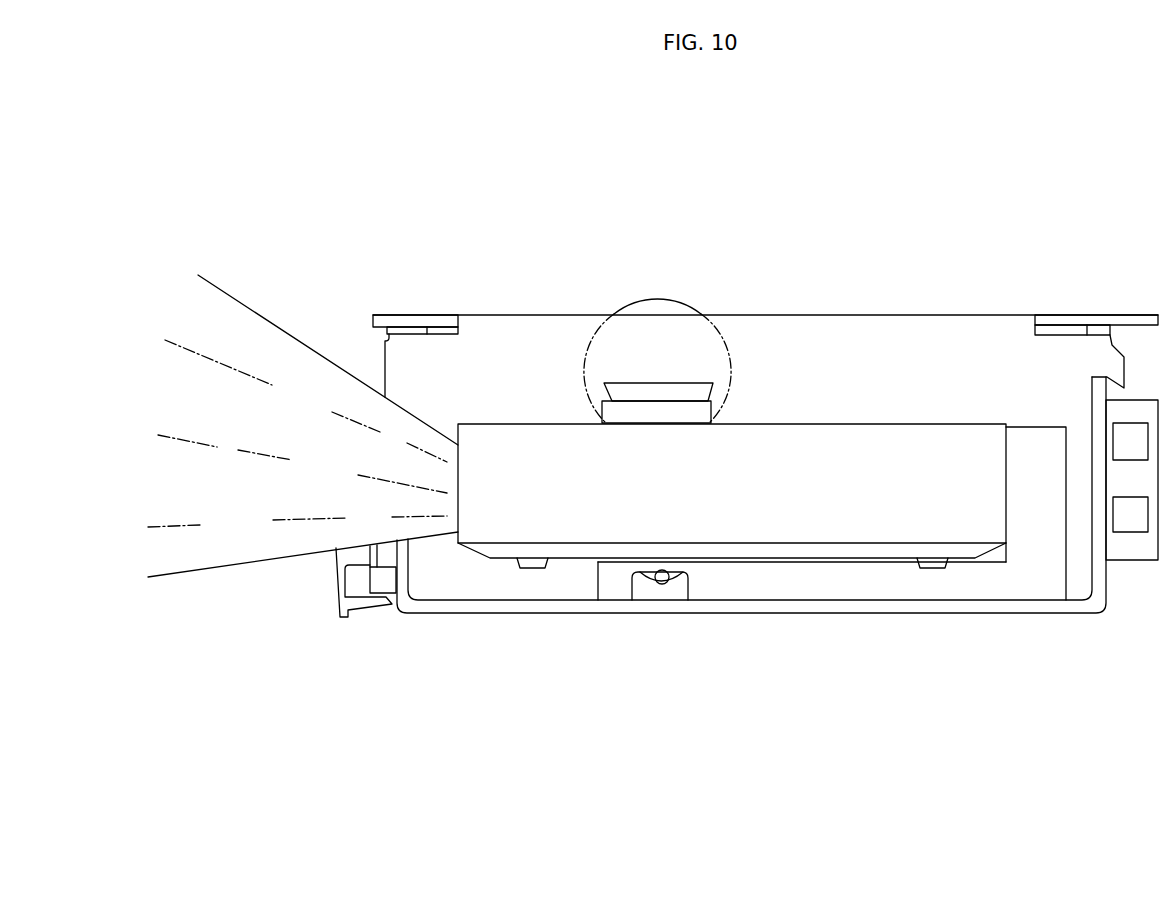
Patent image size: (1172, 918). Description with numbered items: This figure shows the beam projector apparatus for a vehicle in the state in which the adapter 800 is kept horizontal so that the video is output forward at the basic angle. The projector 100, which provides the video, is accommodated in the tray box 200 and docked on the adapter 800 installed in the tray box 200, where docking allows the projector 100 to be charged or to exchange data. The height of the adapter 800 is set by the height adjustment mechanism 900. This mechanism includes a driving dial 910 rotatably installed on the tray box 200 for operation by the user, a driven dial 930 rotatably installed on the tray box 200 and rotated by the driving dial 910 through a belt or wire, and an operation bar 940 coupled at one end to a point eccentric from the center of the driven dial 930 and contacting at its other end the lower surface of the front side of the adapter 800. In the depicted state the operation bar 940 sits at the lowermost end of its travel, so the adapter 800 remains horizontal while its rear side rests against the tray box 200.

The projector 100 is at (883, 453).
The tray box 200 is at (977, 338).
The adapter 800 is at (981, 575).
The height adjustment mechanism 900 is at (654, 320).
The driving dial 910 is at (629, 301).
The driven dial 930 is at (648, 583).
The operation bar 940 is at (663, 583).